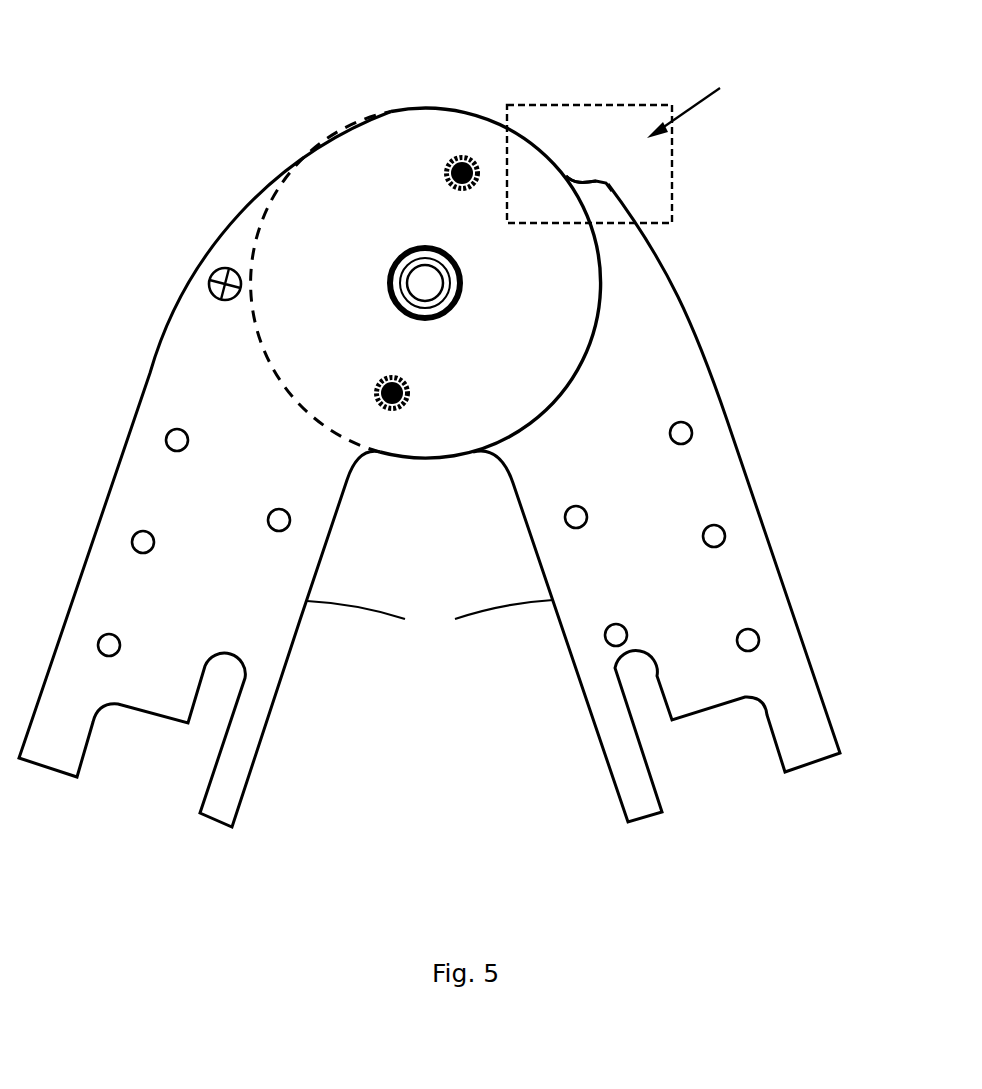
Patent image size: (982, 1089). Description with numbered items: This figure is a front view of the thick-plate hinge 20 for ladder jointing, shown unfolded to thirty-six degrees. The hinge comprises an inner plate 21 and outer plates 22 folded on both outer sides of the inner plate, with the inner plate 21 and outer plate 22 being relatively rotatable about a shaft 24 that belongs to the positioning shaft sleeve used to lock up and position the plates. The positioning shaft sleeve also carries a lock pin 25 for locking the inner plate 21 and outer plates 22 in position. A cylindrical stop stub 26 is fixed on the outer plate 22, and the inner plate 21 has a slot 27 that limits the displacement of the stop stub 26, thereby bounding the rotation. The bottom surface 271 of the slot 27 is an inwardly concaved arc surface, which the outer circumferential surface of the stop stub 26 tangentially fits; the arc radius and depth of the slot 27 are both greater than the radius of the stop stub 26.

The thick-plate hinge 20 is at (270, 111).
The inner plate 21 is at (718, 452).
The outer plate 22 is at (163, 382).
The shaft 24 is at (455, 283).
The lock pin 25 is at (450, 160).
The stop stub 26 is at (211, 278).
The slot 27 is at (612, 186).
The bottom surface 271 is at (584, 181).